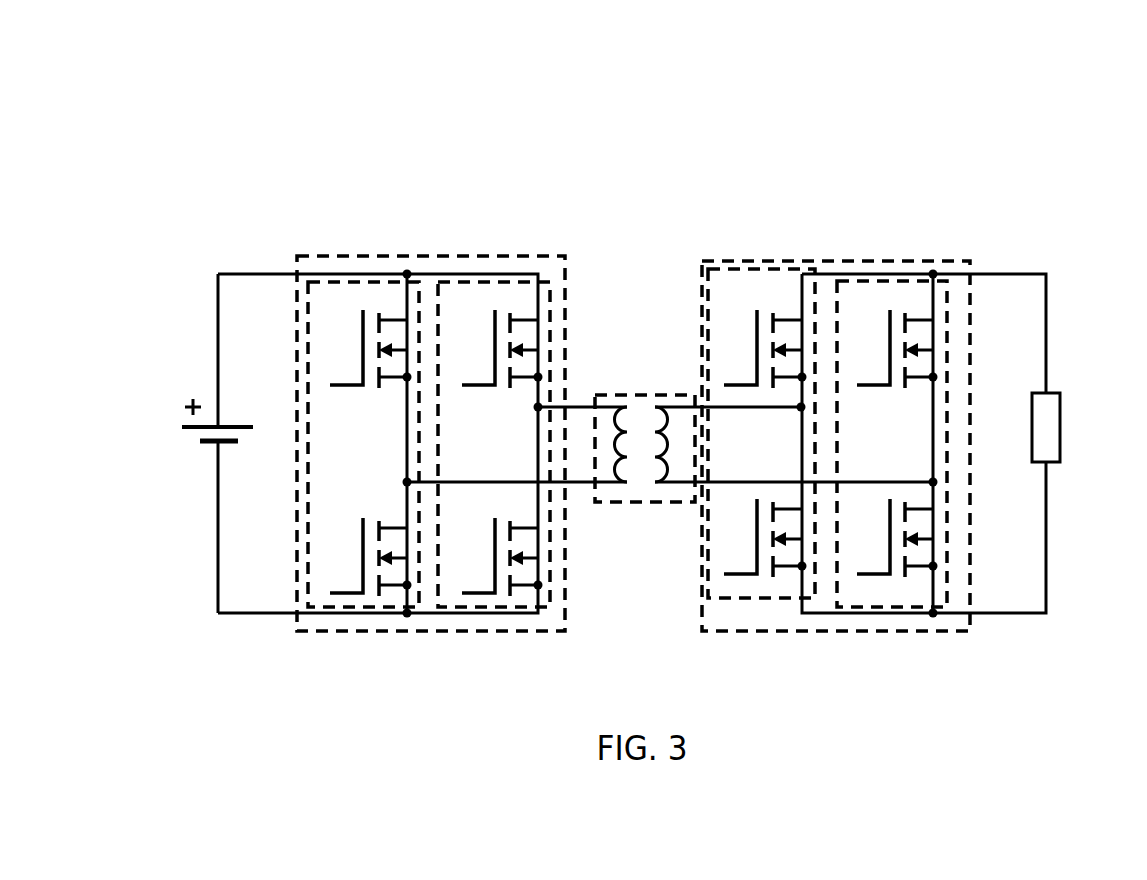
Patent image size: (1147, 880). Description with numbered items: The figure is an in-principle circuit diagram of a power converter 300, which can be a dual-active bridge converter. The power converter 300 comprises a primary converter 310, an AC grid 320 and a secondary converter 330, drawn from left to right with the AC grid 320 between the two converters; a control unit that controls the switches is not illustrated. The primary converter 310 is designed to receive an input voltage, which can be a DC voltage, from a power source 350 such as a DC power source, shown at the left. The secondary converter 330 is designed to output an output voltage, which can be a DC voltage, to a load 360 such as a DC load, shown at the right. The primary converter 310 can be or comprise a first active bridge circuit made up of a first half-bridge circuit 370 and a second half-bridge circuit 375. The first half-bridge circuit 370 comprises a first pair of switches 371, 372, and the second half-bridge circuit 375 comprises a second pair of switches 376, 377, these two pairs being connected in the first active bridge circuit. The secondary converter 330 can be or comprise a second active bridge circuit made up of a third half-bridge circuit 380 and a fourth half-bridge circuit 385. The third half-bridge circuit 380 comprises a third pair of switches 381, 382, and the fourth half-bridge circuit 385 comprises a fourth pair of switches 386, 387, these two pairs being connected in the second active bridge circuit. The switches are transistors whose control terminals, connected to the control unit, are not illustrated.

The power converter 300 is at (697, 108).
The primary converter 310 is at (407, 254).
The AC grid 320 is at (639, 392).
The secondary converter 330 is at (861, 259).
The power source 350 is at (184, 436).
The load 360 is at (1053, 392).
The first half-bridge circuit 370 is at (273, 444).
The switch 371 is at (359, 334).
The switch 372 is at (302, 515).
The second half-bridge circuit 375 is at (536, 481).
The switch 376 is at (491, 334).
The switch 377 is at (552, 567).
The third half-bridge circuit 380 is at (761, 486).
The switch 381 is at (757, 334).
The switch 382 is at (759, 535).
The fourth half-bridge circuit 385 is at (948, 480).
The switch 386 is at (888, 334).
The switch 387 is at (949, 567).